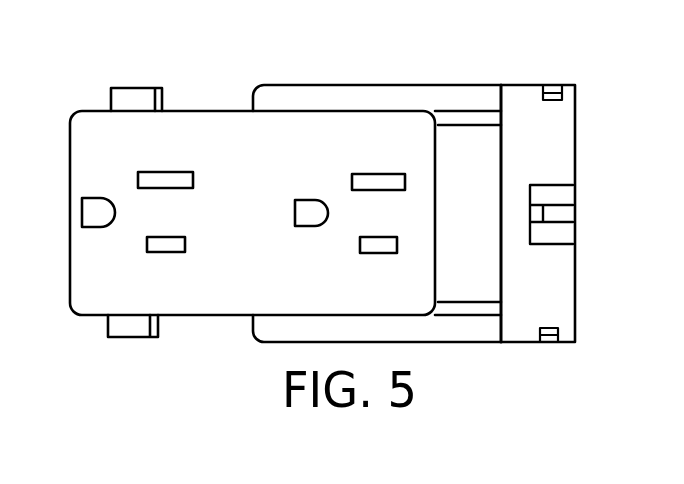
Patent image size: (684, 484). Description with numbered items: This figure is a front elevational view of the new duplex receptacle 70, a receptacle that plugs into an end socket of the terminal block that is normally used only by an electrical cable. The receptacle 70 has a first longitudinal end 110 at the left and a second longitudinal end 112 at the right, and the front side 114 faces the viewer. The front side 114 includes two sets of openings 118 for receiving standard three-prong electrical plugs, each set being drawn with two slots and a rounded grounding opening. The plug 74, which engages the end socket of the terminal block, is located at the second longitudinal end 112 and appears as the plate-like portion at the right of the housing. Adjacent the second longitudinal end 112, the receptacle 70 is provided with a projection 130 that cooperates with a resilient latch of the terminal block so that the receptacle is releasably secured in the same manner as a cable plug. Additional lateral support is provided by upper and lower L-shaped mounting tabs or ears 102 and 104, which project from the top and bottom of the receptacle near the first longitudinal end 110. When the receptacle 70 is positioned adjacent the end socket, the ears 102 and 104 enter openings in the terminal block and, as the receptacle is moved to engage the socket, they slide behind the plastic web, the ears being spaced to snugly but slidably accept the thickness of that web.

The duplex receptacle 70 is at (427, 62).
The plug 74 is at (576, 112).
The upper L-shaped mounting ear 102 is at (130, 88).
The lower L-shaped mounting ear 104 is at (125, 338).
The first longitudinal end 110 is at (66, 108).
The second longitudinal end 112 is at (590, 166).
The front side 114 is at (250, 282).
The openings 118 is at (163, 172).
The projection 130 is at (530, 215).